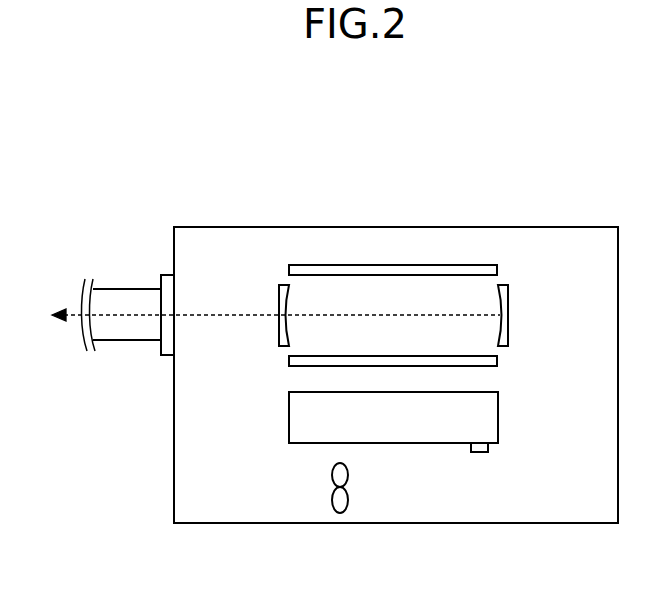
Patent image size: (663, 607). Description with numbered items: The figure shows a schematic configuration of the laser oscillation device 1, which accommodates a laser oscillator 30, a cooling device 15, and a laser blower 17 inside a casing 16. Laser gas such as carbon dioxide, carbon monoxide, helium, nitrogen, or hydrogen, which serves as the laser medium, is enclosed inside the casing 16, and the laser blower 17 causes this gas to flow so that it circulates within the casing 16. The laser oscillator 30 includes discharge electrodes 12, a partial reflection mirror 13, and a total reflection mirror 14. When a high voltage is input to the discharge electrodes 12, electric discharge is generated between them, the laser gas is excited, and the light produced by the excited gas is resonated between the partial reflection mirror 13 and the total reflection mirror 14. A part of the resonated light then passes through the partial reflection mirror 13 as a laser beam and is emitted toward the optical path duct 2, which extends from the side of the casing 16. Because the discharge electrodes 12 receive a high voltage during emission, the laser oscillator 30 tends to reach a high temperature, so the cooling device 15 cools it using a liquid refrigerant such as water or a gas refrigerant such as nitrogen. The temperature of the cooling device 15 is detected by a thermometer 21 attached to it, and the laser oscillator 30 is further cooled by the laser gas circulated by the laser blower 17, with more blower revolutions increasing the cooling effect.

The laser oscillation device 1 is at (569, 130).
The optical path duct 2 is at (124, 289).
The discharge electrodes 12 is at (370, 270).
The partial reflection mirror 13 is at (280, 300).
The total reflection mirror 14 is at (510, 297).
The cooling device 15 is at (447, 443).
The casing 16 is at (580, 228).
The laser blower 17 is at (340, 513).
The thermometer 21 is at (480, 452).
The laser oscillator 30 is at (424, 244).